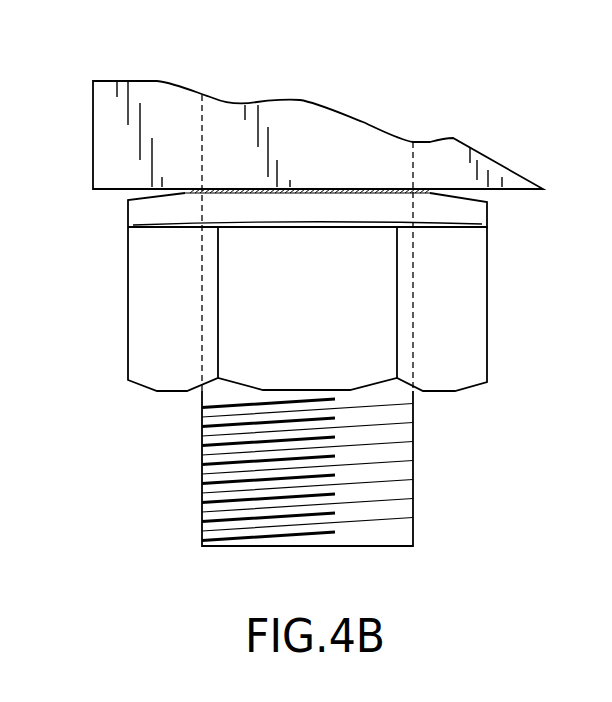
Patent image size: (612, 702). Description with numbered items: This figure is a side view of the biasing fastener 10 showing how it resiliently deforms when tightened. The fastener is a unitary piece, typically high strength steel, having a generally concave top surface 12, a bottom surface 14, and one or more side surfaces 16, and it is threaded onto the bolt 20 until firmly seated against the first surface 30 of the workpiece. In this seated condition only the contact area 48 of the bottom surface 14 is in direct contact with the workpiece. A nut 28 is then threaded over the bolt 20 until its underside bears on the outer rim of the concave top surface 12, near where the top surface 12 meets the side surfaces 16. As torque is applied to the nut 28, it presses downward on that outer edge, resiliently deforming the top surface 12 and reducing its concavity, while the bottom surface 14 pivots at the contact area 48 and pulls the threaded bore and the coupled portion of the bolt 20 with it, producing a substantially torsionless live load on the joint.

The biasing fastener 10 is at (493, 218).
The top surface 12 is at (260, 222).
The bottom surface 14 is at (477, 197).
The side surfaces 16 is at (127, 212).
The bolt 20 is at (405, 504).
The nut 28 is at (473, 330).
The first surface of the workpiece 30 is at (101, 190).
The contact area 48 is at (188, 189).